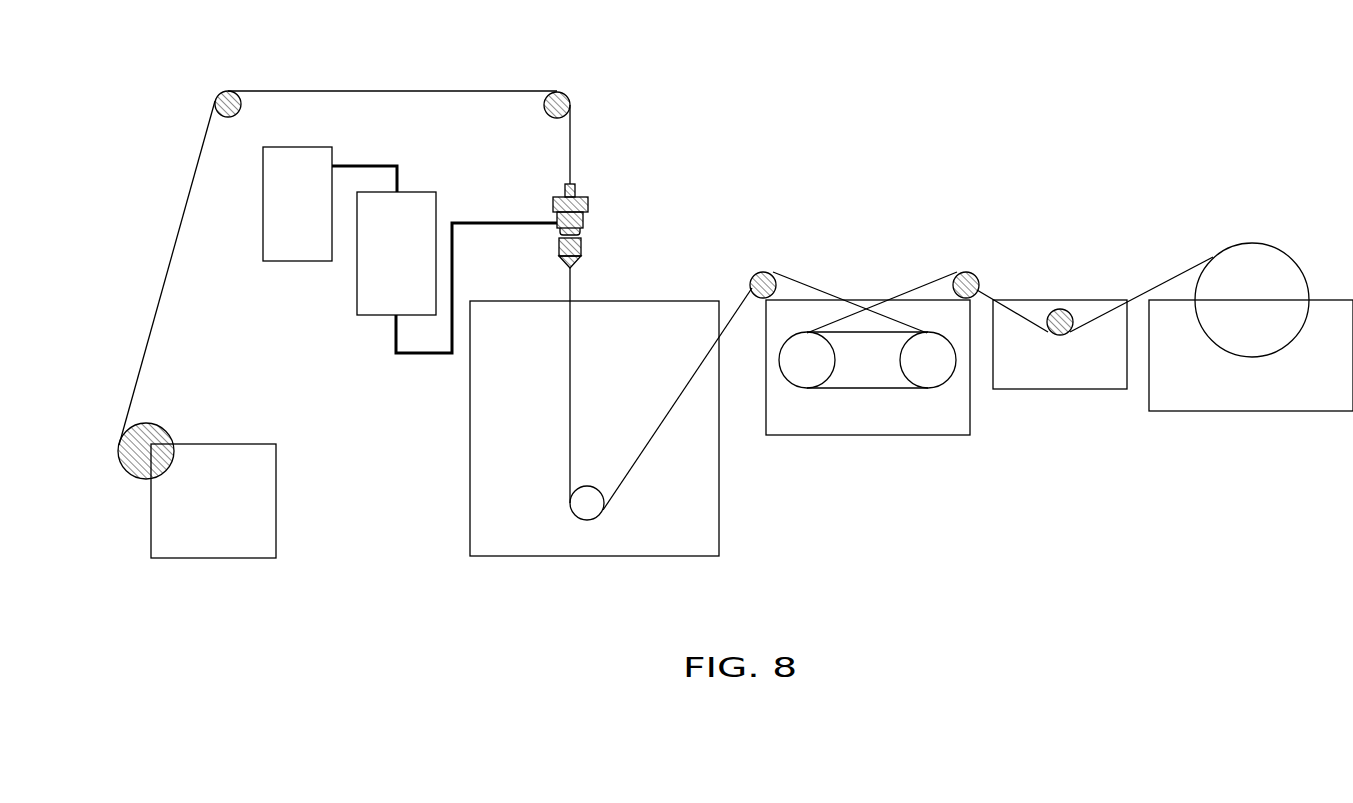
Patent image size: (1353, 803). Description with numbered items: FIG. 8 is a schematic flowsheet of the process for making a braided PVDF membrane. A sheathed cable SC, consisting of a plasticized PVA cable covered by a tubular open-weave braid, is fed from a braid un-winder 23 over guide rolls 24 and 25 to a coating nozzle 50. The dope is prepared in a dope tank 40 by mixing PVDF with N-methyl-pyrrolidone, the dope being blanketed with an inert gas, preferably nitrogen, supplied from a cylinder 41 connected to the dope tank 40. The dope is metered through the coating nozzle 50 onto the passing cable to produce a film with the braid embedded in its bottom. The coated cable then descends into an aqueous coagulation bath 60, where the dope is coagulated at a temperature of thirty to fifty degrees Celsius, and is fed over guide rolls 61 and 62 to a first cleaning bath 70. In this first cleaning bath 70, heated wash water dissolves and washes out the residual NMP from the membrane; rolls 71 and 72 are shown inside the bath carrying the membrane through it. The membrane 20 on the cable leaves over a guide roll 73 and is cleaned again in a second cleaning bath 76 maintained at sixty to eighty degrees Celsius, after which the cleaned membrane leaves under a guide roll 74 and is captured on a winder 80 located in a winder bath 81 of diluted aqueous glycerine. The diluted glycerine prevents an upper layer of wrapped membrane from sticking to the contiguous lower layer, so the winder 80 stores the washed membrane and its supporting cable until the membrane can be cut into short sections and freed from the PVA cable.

The sheathed cable SC is at (178, 248).
The membrane 20 is at (925, 284).
The braid un-winder 23 is at (278, 500).
The guide roll 24 is at (219, 92).
The guide roll 25 is at (568, 95).
The dope tank 40 is at (437, 206).
The cylinder 41 is at (292, 262).
The coating nozzle 50 is at (585, 248).
The aqueous coagulation bath 60 is at (468, 455).
The guide roll 61 is at (592, 487).
The guide roll 62 is at (766, 271).
The cleaning bath 70 is at (875, 435).
The drive roller 71 is at (797, 389).
The drive roller 72 is at (938, 389).
The guide roll 73 is at (960, 271).
The guide roll 74 is at (1057, 308).
The second cleaning bath 76 is at (1057, 390).
The winder 80 is at (1268, 246).
The winder bath 81 is at (1222, 412).